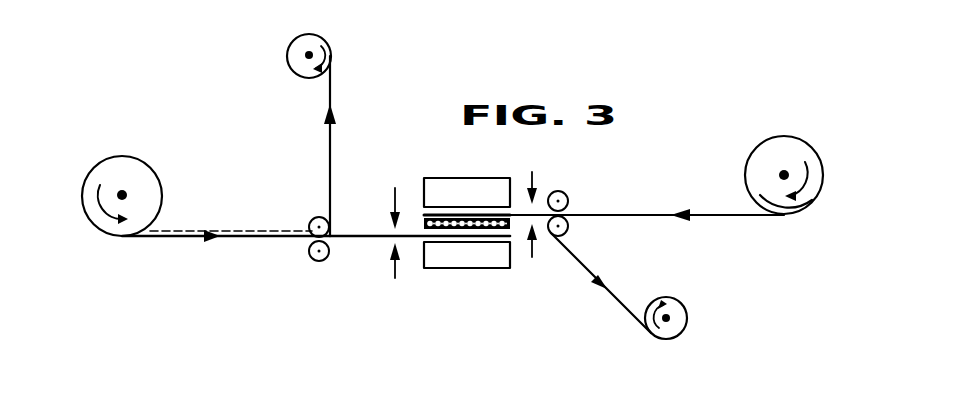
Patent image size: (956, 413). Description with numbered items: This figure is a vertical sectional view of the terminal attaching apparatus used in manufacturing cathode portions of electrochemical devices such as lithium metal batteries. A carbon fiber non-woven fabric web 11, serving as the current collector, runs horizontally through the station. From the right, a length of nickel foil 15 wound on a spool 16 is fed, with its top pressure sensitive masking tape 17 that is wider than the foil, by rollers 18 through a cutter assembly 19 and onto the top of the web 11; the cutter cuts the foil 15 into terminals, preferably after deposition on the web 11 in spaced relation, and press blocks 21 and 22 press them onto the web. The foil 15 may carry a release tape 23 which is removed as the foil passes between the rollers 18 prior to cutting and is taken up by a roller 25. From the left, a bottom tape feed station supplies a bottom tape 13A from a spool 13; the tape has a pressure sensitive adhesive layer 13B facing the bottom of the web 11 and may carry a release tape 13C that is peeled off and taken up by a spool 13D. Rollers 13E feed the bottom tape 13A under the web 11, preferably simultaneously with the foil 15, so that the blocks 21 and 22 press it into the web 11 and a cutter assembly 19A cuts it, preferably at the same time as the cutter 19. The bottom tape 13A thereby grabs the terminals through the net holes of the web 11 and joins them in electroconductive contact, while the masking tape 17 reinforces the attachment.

The carbon fiber non-woven fabric web 11 is at (424, 221).
The spool 13 is at (122, 165).
The bottom tape 13A is at (195, 240).
The pressure sensitive adhesive layer 13B is at (353, 234).
The release tape 13C is at (202, 232).
The spool 13D is at (326, 38).
The rollers 13E is at (320, 261).
The nickel foil 15 is at (722, 217).
The spool 16 is at (810, 190).
The pressure sensitive masking tape 17 is at (632, 213).
The rollers 18 is at (568, 192).
The cutter assembly 19 is at (531, 257).
The cutter assembly 19A is at (395, 274).
The press block 21 is at (456, 192).
The press block 22 is at (465, 262).
The release tape 23 is at (620, 293).
The roller 25 is at (682, 312).